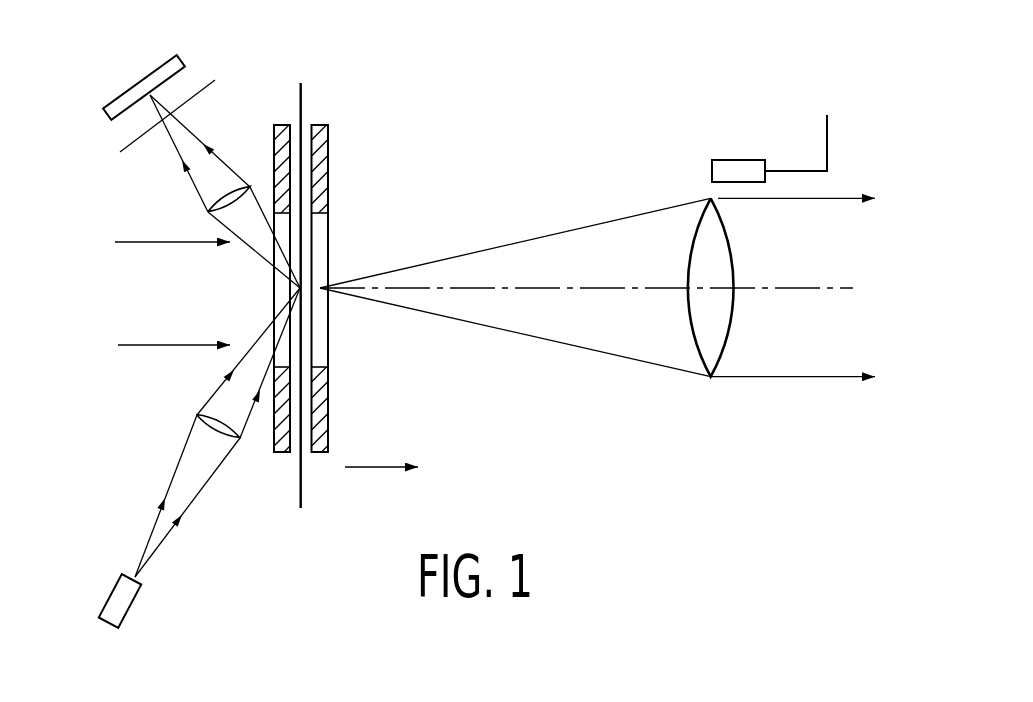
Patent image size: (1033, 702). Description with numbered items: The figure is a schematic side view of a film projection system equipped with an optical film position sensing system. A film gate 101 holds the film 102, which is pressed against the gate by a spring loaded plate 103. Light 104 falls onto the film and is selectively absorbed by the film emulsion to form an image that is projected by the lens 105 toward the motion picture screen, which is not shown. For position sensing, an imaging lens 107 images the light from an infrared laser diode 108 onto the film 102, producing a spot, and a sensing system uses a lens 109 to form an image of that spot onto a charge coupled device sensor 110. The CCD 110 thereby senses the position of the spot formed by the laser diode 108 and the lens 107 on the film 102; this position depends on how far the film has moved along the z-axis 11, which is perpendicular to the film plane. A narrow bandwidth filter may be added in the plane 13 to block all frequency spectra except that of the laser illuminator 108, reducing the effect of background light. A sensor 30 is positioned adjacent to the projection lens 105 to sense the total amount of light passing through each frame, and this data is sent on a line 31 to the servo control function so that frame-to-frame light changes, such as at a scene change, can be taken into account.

The film gate 101 is at (329, 163).
The film 102 is at (301, 97).
The spring loaded plate 103 is at (273, 147).
The light 104 is at (152, 242).
The lens 105 is at (722, 330).
The imaging lens 107 is at (230, 437).
The infrared laser diode 108 is at (110, 597).
The lens 109 is at (207, 212).
The charge coupled device (CCD) sensor 110 is at (155, 62).
The plane 13 is at (201, 88).
The z-axis 11 is at (365, 463).
The sensor 30 is at (730, 160).
The line 31 is at (827, 132).